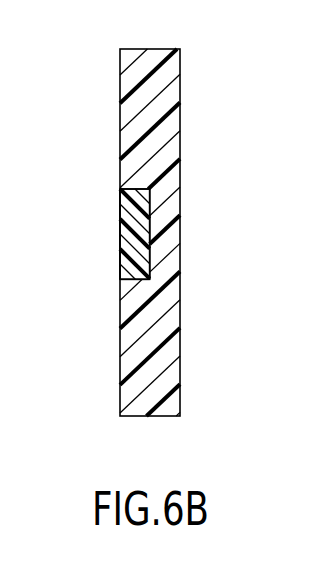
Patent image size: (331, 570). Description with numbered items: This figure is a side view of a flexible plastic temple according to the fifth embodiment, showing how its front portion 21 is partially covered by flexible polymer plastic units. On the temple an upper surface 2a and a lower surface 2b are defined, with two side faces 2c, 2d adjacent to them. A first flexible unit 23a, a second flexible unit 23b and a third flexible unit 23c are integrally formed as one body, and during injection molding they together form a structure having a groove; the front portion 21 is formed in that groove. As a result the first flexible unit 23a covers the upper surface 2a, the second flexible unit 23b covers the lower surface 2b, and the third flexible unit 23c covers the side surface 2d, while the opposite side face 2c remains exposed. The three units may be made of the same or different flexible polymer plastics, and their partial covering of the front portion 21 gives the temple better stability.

The front portion 21 is at (122, 246).
The upper surface 2a is at (130, 188).
The lower surface 2b is at (133, 280).
The side face 2c is at (120, 206).
The side surface 2d is at (150, 258).
The first flexible unit 23a is at (158, 129).
The second flexible unit 23b is at (158, 354).
The third flexible unit 23c is at (158, 215).